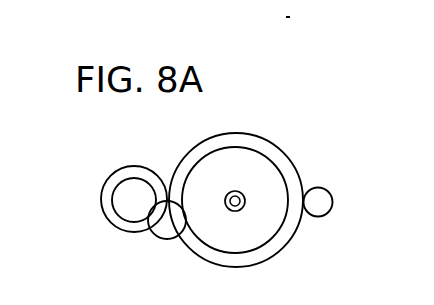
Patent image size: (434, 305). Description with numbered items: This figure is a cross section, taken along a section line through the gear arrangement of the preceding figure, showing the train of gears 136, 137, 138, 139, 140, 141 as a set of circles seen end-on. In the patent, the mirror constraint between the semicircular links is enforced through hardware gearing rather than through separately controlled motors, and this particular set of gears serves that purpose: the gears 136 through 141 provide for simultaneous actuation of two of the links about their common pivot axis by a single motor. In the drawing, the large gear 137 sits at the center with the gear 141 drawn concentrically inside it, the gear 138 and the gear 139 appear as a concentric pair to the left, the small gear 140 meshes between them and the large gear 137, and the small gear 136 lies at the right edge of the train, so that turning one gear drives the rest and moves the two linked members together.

The gear 136 is at (327, 193).
The gear 137 is at (278, 152).
The gear 138 is at (108, 183).
The gear 139 is at (125, 208).
The gear 140 is at (160, 237).
The gear 141 is at (270, 235).